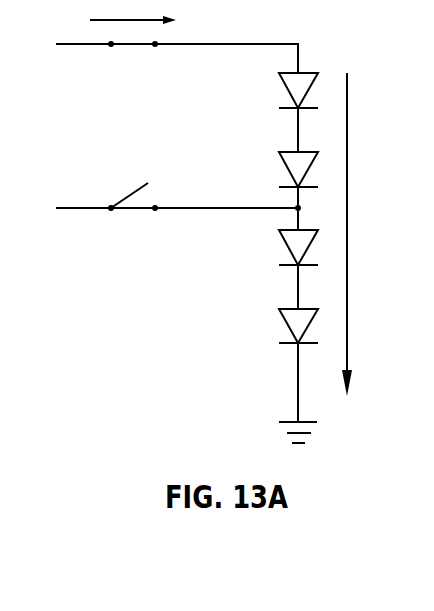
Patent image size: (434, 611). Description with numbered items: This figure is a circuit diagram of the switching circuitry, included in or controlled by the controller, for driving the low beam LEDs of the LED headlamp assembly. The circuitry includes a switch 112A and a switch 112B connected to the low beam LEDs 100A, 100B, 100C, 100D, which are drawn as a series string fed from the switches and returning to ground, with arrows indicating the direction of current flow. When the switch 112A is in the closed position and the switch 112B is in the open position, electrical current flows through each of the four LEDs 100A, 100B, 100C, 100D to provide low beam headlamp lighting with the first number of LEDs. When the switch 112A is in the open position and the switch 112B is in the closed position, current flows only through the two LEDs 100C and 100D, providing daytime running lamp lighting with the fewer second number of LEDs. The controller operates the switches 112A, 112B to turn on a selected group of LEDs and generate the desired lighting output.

The switch 112A is at (137, 50).
The switch 112B is at (137, 218).
The LED 100A is at (290, 95).
The LED 100B is at (290, 174).
The LED 100C is at (290, 252).
The LED 100D is at (290, 330).